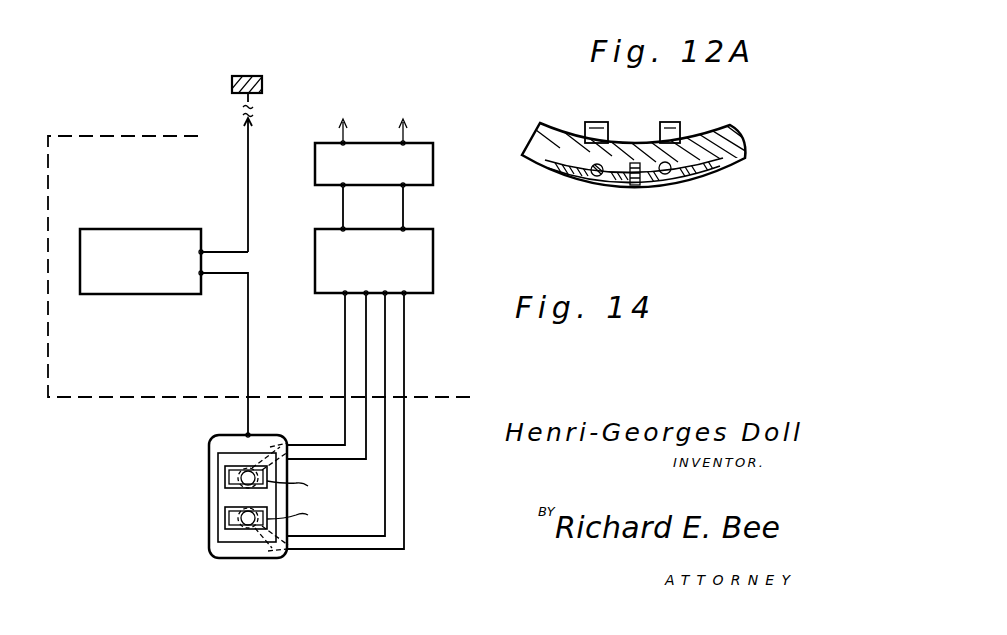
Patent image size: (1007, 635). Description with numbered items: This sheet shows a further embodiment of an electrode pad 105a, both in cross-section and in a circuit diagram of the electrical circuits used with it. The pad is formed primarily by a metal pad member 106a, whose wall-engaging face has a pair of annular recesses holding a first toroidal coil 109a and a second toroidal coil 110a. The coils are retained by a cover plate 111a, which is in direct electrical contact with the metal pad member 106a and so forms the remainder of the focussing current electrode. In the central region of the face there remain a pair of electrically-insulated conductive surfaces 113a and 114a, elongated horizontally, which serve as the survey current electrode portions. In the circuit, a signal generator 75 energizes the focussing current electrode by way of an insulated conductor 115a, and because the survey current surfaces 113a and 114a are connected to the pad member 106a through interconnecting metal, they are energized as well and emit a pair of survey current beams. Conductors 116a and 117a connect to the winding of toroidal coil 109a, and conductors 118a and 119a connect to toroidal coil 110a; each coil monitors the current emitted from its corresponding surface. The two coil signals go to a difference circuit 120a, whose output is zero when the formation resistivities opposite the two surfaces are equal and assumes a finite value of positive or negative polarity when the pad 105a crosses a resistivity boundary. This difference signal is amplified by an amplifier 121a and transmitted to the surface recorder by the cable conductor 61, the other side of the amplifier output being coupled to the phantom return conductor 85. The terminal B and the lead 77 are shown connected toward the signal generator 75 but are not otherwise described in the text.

In FIG. 14, the terminal B is at (262, 82).
In FIG. 14, the conductor 77 is at (248, 164).
In FIG. 14, the signal generator 75 is at (155, 229).
In FIG. 14, the phantom return conductor 85 is at (338, 132).
In FIG. 14, the cable conductor 61 is at (406, 134).
In FIG. 14, the amplifier 121a is at (433, 182).
In FIG. 14, the difference circuit 120a is at (433, 263).
In FIG. 14, the insulated conductor 115a is at (247, 343).
In FIG. 14, the insulated conductor 116a is at (345, 331).
In FIG. 14, the insulated conductor 117a is at (366, 358).
In FIG. 14, the insulated conductor 118a is at (385, 323).
In FIG. 14, the insulated conductor 119a is at (404, 355).
In FIG. 14, the metal pad member 106a is at (209, 450).
In FIG. 14, the first toroidal coil 109a is at (231, 480).
In FIG. 12A, the first toroidal coil 109a is at (600, 177).
In FIG. 14, the second toroidal coil 110a is at (231, 518).
In FIG. 14, the electrode pad 105a is at (198, 535).
In FIG. 12A, the electrode pad 105a is at (742, 167).
In FIG. 14, the conductive surface 113a is at (309, 486).
In FIG. 12A, the conductive surface 113a is at (652, 184).
In FIG. 14, the conductive surface 114a is at (309, 516).
In FIG. 12A, the cover plate 111a is at (550, 172).